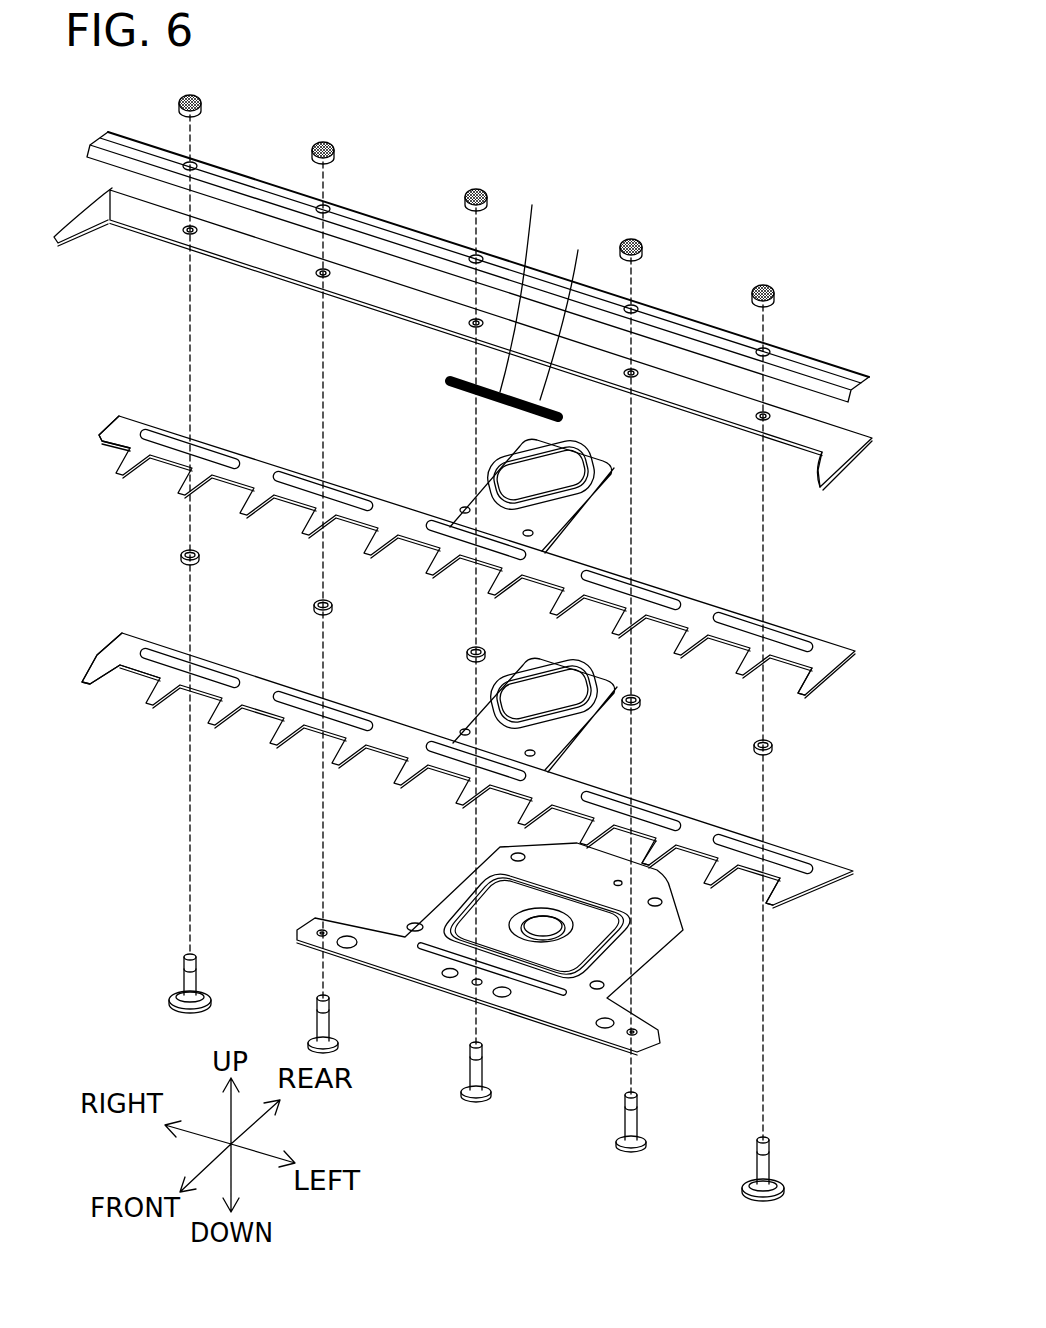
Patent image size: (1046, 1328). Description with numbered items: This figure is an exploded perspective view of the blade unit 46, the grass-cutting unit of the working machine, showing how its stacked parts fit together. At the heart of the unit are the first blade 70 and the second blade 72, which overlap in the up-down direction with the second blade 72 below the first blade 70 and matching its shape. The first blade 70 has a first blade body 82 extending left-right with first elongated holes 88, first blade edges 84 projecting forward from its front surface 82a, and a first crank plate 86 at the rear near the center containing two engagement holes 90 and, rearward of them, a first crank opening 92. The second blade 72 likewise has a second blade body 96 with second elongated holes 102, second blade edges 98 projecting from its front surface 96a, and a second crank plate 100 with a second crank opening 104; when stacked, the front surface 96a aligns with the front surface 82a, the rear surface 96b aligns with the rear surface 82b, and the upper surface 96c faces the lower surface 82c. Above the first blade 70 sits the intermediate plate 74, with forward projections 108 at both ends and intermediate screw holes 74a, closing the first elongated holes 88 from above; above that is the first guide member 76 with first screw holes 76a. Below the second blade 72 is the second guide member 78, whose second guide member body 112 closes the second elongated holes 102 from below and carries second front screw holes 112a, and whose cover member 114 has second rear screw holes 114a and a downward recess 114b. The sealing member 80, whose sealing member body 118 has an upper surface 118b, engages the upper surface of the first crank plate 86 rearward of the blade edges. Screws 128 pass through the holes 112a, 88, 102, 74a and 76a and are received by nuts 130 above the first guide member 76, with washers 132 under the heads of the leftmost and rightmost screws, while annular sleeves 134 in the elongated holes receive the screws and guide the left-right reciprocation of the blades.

The blade unit 46 is at (746, 158).
The first blade 70 is at (794, 603).
The second blade 72 is at (796, 826).
The intermediate plate 74 is at (853, 484).
The intermediate screw holes 74a is at (768, 412).
The first guide member 76 is at (834, 345).
The first screw holes 76a is at (760, 345).
The second guide member 78 is at (742, 962).
The sealing member 80 is at (440, 382).
The first blade body 82 is at (708, 595).
The front surface of the first blade body 82a is at (641, 703).
The rear surface of the first blade body 82b is at (838, 655).
The lower surface of the first blade body 82c is at (838, 683).
The first blade edges 84 is at (136, 416).
The first crank plate 86 is at (518, 442).
The first elongated holes 88 is at (206, 443).
The engagement holes 90 is at (462, 508).
The first crank opening 92 is at (515, 463).
The second blade body 96 is at (700, 825).
The front surface of the second blade body 96a is at (662, 893).
The rear surface of the second blade body 96b is at (838, 872).
The upper surface of the second blade body 96c is at (845, 890).
The second blade edges 98 is at (92, 660).
The second crank plate 100 is at (516, 675).
The second elongated holes 102 is at (208, 668).
The second crank opening 104 is at (516, 674).
The projections 108 is at (72, 226).
The second guide member body 112 is at (556, 1010).
The second front screw holes 112a is at (640, 1034).
The cover member 114 is at (452, 902).
The second rear screw holes 114a is at (514, 855).
The recess 114b is at (540, 1052).
The sealing member body 118 is at (490, 294).
The upper surface of the sealing member body 118b is at (573, 309).
The screws 128 is at (182, 985).
The nuts 130 is at (178, 104).
The washers 132 is at (170, 1006).
The sleeves 134 is at (180, 558).